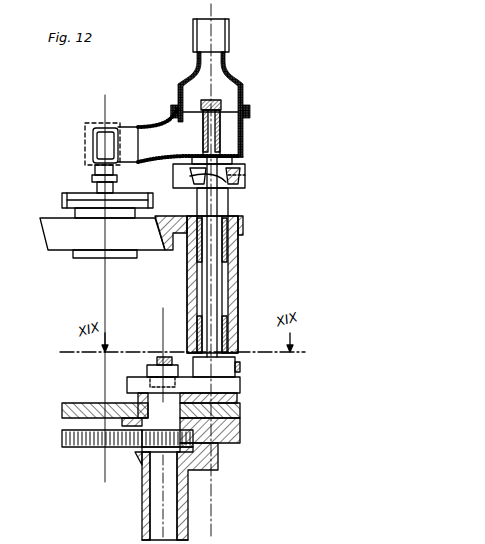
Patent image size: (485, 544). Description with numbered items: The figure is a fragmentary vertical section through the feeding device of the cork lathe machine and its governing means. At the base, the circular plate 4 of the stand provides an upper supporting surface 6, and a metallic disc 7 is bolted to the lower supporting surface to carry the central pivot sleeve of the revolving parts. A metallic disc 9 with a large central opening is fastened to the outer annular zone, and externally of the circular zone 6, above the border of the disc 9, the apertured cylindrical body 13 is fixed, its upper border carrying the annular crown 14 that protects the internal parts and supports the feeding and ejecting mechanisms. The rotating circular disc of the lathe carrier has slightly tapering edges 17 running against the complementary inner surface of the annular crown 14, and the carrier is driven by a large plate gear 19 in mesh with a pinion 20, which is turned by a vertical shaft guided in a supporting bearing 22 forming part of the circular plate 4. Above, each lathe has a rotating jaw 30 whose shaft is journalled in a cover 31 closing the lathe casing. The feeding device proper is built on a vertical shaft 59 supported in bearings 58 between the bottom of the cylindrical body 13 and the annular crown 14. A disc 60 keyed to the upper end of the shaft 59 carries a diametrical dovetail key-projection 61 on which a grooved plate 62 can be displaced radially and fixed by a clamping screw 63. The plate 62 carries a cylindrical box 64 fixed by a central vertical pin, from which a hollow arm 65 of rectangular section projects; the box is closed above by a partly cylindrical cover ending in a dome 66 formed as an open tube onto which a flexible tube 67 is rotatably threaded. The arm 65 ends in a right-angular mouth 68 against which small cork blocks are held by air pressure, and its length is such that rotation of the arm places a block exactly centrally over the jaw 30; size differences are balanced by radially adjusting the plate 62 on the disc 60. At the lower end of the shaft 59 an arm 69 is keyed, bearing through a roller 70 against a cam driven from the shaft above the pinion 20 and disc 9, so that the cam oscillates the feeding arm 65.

The circular plate 4 is at (219, 462).
The supporting surface 6 is at (241, 424).
The metallic disc 7 is at (134, 378).
The metallic disc 9 is at (241, 410).
The cylindrical body 13 is at (240, 386).
The annular crown 14 is at (252, 220).
The tapering edges 17 is at (55, 240).
The plate gear 19 is at (92, 448).
The pinion 20 is at (142, 454).
The supporting bearing 22 is at (196, 500).
The rotating jaw 30 is at (118, 180).
The cover 31 is at (66, 192).
The bearings 58 is at (238, 290).
The vertical shaft 59 is at (197, 278).
The disc 60 is at (238, 186).
The dovetail key-projection 61 is at (200, 170).
The plate 62 is at (245, 167).
The clamping screw 63 is at (218, 143).
The cylindrical box 64 is at (250, 118).
The hollow arm 65 is at (156, 124).
The dome 66 is at (243, 95).
The flexible tube 67 is at (229, 42).
The mouth 68 is at (99, 124).
The arm 69 is at (240, 370).
The roller 70 is at (152, 380).